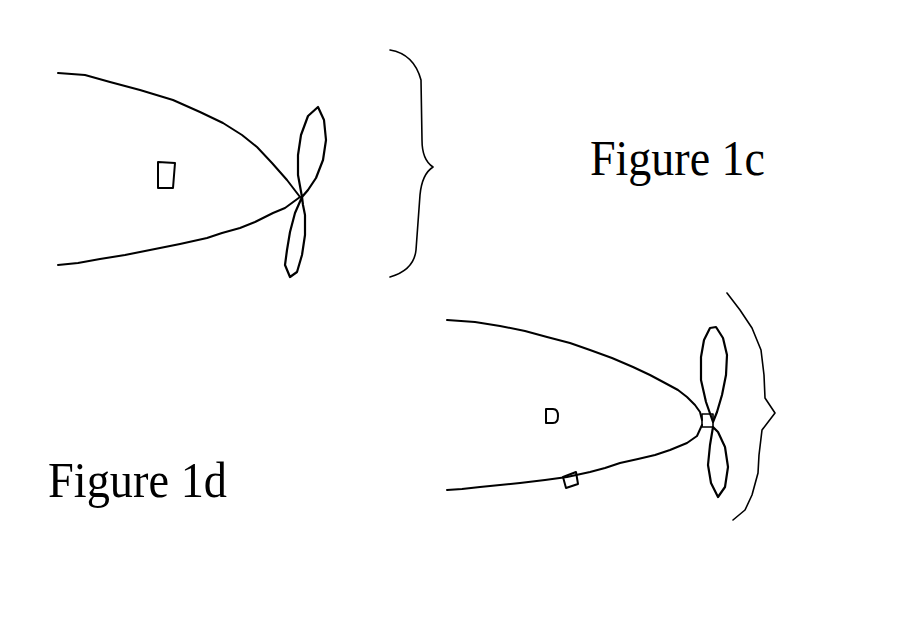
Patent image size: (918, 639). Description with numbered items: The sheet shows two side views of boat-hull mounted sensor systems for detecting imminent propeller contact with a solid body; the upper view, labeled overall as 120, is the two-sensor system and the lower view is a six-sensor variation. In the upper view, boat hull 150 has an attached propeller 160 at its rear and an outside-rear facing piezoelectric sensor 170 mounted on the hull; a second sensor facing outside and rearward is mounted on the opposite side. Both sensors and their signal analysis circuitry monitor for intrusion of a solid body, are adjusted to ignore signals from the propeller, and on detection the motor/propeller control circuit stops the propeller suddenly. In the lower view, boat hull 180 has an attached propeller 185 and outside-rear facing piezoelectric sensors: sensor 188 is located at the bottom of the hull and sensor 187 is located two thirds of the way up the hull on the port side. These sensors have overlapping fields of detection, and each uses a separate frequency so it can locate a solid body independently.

In FIG. 1C, the optical fiber assembly 120 is at (617, 14).
In FIG. 1C, the boat hull 150 is at (449, 163).
In FIG. 1C, the propeller 160 is at (179, 268).
In FIG. 1C, the outside-rear facing piezoelectric sensor 170 is at (182, 94).
In FIG. 1D, the boat hull 180 is at (782, 406).
In FIG. 1D, the propeller 185 is at (664, 336).
In FIG. 1D, the sensor 187 is at (425, 464).
In FIG. 1D, the sensor 188 is at (506, 528).